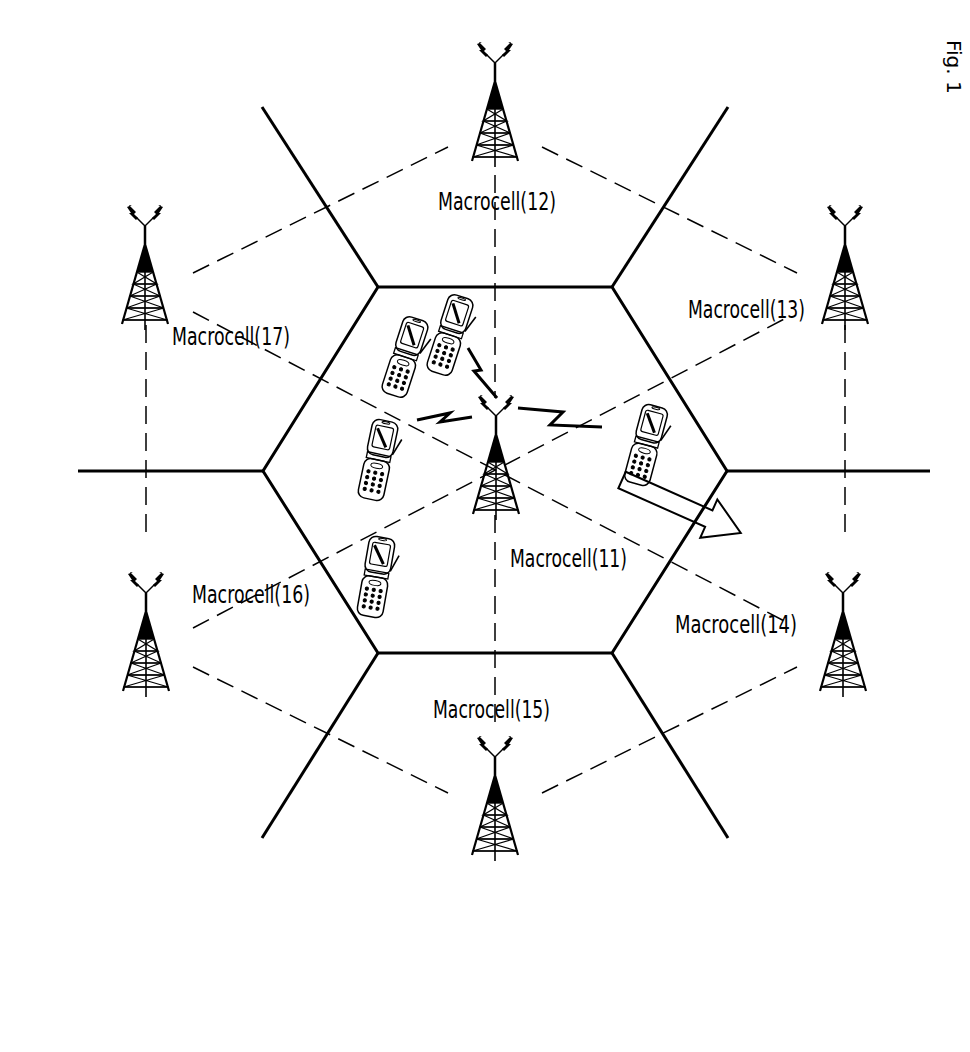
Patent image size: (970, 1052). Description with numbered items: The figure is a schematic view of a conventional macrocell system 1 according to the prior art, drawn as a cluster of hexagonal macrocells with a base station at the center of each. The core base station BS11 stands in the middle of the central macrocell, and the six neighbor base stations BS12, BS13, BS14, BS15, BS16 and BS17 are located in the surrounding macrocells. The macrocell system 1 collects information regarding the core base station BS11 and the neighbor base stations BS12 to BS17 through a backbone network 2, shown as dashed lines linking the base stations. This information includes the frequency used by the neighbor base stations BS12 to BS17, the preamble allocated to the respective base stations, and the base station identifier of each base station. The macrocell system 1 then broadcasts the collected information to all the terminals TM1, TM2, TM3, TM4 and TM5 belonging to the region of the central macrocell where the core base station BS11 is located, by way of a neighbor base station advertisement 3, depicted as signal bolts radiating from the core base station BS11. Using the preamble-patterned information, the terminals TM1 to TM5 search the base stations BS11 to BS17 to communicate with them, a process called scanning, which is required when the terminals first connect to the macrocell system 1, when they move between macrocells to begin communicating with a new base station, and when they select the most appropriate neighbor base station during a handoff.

The macrocell system 1 is at (838, 140).
The backbone network 2 is at (846, 397).
The neighbor base station advertisement 3 is at (552, 408).
The core base station BS11 is at (478, 520).
The neighbor base station BS12 is at (480, 117).
The neighbor base station BS13 is at (853, 275).
The neighbor base station BS14 is at (850, 643).
The neighbor base station BS15 is at (478, 830).
The neighbor base station BS16 is at (140, 644).
The neighbor base station BS17 is at (137, 274).
The terminal TM1 is at (665, 412).
The terminal TM2 is at (449, 300).
The terminal TM3 is at (397, 343).
The terminal TM4 is at (368, 445).
The terminal TM5 is at (362, 614).